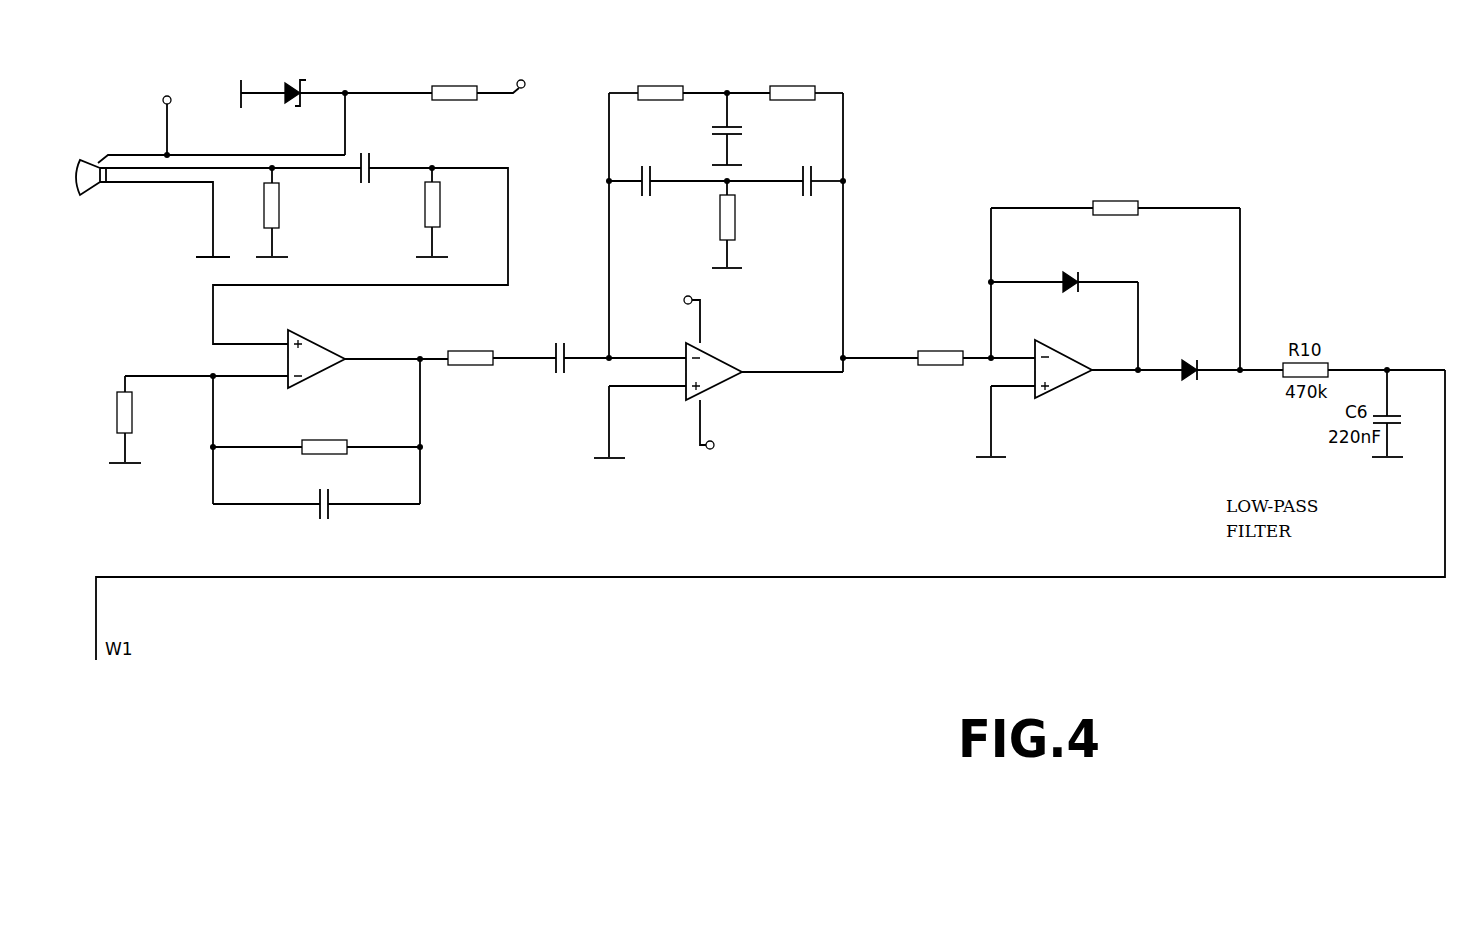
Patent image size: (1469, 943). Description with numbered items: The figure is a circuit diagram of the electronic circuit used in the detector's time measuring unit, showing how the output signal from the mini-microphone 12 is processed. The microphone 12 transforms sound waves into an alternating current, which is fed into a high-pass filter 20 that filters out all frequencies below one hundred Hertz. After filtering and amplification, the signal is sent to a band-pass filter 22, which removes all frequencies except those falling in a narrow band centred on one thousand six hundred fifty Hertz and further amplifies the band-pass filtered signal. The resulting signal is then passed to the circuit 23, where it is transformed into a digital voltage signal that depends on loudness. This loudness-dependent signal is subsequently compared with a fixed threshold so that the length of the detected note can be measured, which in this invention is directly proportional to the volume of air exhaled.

The mini-microphone 12 is at (83, 163).
The high-pass filter 20 is at (364, 260).
The band-pass filter 22 is at (798, 284).
The circuit 23 is at (1176, 463).